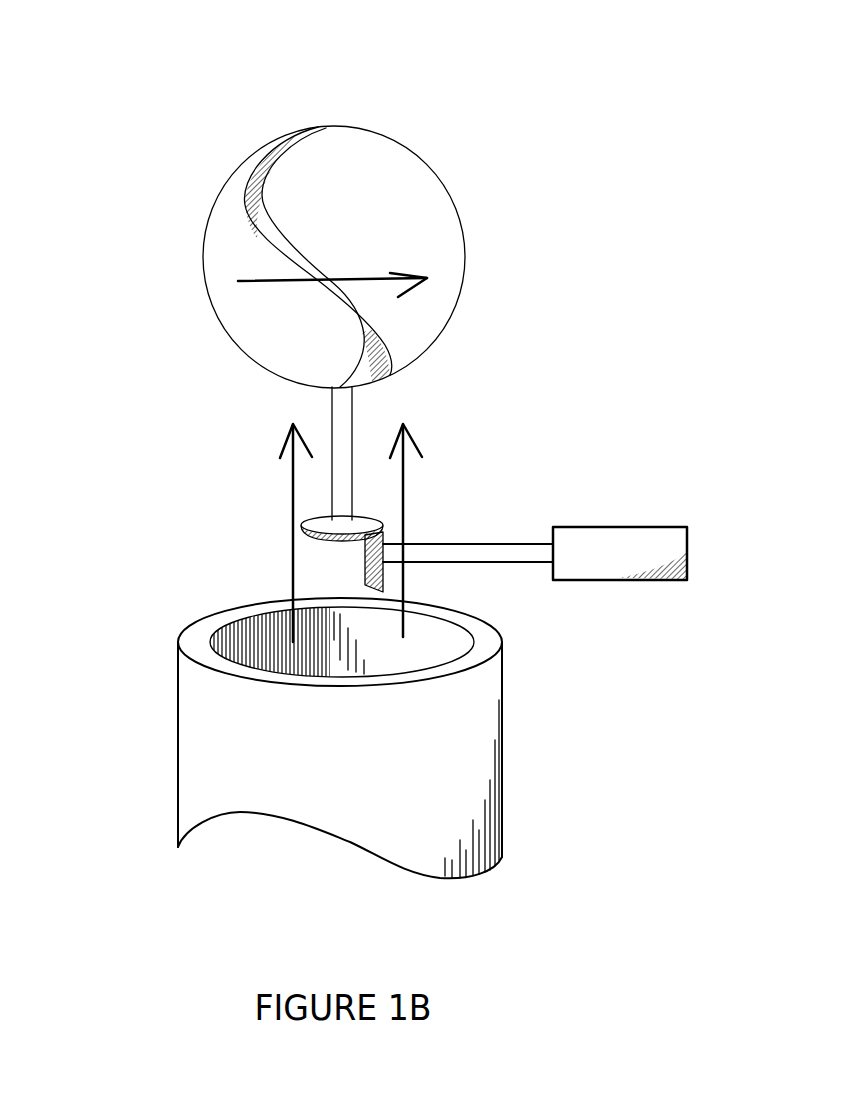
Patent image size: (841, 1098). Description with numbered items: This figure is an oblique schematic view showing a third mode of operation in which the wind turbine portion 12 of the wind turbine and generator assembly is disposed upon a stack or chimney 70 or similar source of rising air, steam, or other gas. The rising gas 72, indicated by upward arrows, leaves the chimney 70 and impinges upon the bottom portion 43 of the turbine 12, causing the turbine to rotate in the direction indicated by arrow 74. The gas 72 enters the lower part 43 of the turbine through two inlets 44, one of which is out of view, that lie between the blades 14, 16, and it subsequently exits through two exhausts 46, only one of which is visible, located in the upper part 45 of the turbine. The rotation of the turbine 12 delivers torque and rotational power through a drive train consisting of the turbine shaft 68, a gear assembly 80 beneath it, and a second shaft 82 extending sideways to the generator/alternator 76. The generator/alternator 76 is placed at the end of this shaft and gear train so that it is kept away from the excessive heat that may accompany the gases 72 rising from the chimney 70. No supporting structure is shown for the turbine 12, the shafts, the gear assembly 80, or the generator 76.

The wind turbine portion 12 is at (270, 80).
The blade 14 is at (220, 228).
The blade 16 is at (378, 215).
The bottom portion 43 is at (330, 363).
The inlet 44 is at (367, 342).
The upper part 45 is at (337, 150).
The exhaust 46 is at (268, 157).
The shaft 68 is at (330, 415).
The stack or chimney 70 is at (287, 753).
The rising gas 72 is at (347, 508).
The rotation arrow 74 is at (313, 277).
The generator/alternator 76 is at (615, 545).
The gear assembly 80 is at (347, 560).
The second shaft 82 is at (478, 570).